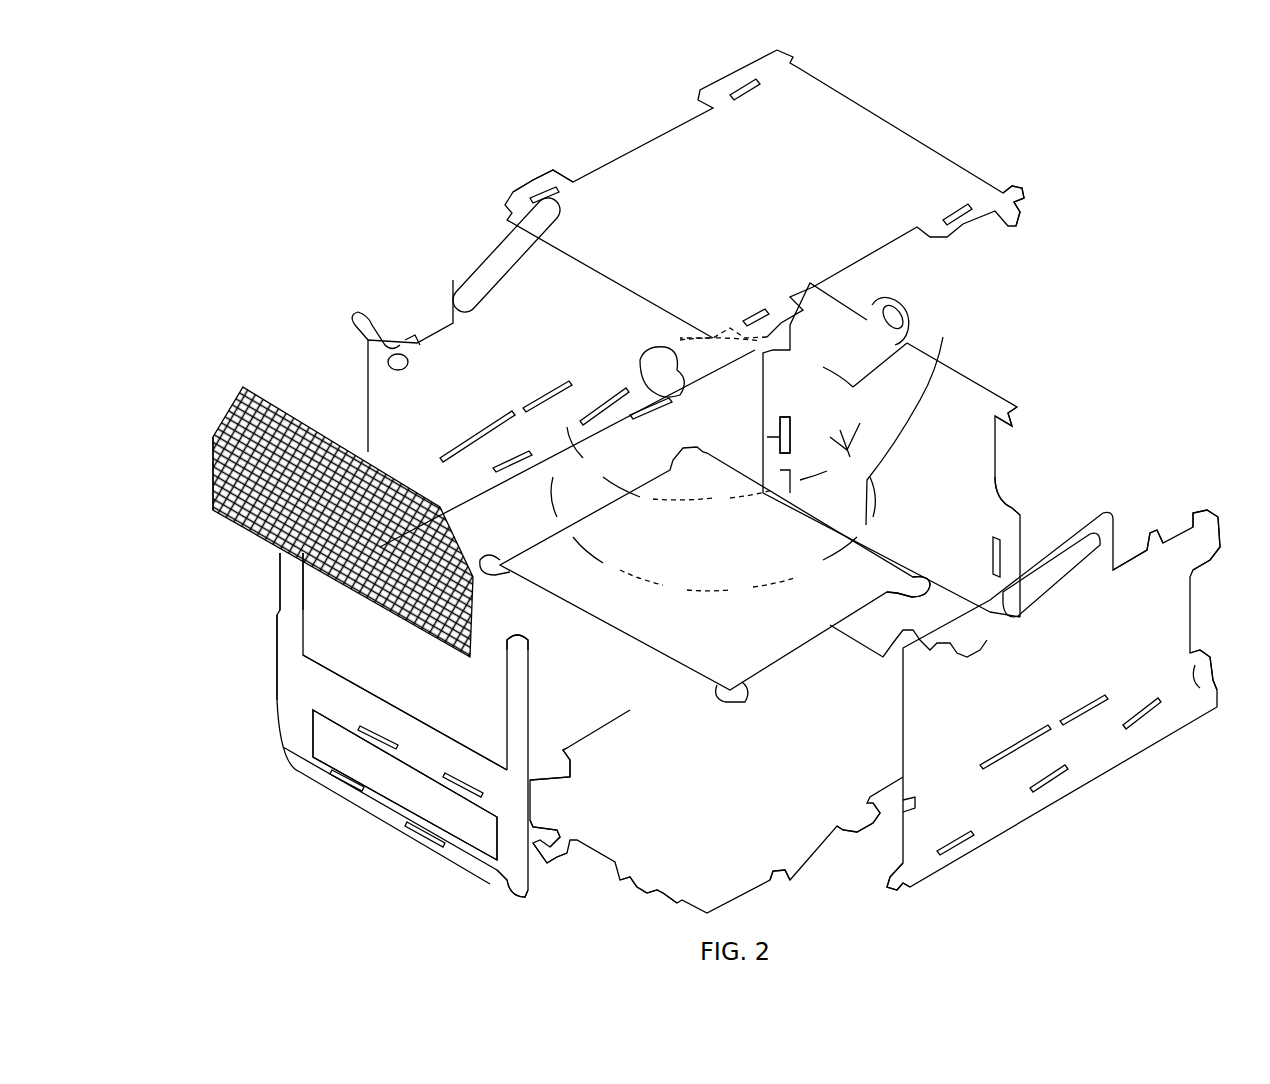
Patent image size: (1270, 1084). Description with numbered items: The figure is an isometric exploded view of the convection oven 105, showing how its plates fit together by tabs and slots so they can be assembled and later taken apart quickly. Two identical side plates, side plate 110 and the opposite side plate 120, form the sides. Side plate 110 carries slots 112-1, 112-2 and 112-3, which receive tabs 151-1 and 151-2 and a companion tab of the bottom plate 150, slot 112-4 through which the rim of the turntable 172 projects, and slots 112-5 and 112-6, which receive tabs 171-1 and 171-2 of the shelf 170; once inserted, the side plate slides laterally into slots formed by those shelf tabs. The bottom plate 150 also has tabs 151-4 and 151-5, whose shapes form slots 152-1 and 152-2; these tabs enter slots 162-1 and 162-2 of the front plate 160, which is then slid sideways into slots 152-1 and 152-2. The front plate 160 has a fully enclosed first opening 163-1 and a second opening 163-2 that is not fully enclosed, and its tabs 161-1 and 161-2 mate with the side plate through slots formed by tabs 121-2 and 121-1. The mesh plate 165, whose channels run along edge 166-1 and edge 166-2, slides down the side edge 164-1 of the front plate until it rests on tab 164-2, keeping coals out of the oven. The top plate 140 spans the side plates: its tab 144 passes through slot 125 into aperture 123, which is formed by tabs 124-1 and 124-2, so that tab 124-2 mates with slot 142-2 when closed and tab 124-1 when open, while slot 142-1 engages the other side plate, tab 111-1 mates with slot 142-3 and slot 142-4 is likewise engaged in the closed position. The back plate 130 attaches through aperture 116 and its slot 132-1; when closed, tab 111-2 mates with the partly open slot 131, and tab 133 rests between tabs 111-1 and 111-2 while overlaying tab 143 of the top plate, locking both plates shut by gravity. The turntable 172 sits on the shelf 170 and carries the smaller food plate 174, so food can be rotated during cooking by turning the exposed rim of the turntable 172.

The convection oven 105 is at (252, 90).
The side plate 110 is at (1146, 667).
The tab 111-1 is at (1147, 540).
The tab 111-2 is at (1205, 520).
The slot 112-1 is at (950, 846).
The slot 112-2 is at (1047, 783).
The slot 112-3 is at (1140, 723).
The slot 112-4 is at (1010, 750).
The slot 112-5 is at (1067, 717).
The slot 112-6 is at (907, 800).
The aperture 116 is at (1210, 700).
The side plate 120 is at (537, 362).
The tab 121-1 is at (883, 660).
The tab 121-2 is at (887, 880).
The aperture 123 is at (407, 372).
The tab 124-1 is at (385, 325).
The tab 124-2 is at (420, 335).
The slot 125 is at (412, 345).
The back plate 130 is at (947, 482).
The slot 131 is at (1010, 455).
The slot 132-1 is at (778, 440).
The tab 133 is at (1015, 410).
The top plate 140 is at (760, 226).
The slot 142-1 is at (758, 310).
The slot 142-2 is at (556, 205).
The slot 142-3 is at (945, 220).
The slot 142-4 is at (744, 102).
The tab 143 is at (1017, 212).
The tab 144 is at (509, 200).
The bottom plate 150 is at (769, 757).
The tab 151-1 is at (783, 888).
The tab 151-2 is at (856, 815).
The tab 151-4 is at (552, 855).
The tab 151-5 is at (643, 900).
The slot 152-1 is at (555, 828).
The slot 152-2 is at (643, 878).
The front plate 160 is at (329, 697).
The tab 161-1 is at (505, 892).
The tab 161-2 is at (500, 662).
The slot 162-1 is at (350, 790).
The slot 162-2 is at (410, 828).
The first opening 163-1 is at (357, 750).
The second opening 163-2 is at (333, 637).
The edge 164-1 is at (280, 572).
The tab 164-2 is at (278, 620).
The mesh plate 165 is at (250, 408).
The edge 166-1 is at (212, 478).
The edge 166-2 is at (478, 578).
The shelf 170 is at (724, 620).
The tab 171-1 is at (912, 592).
The tab 171-2 is at (728, 690).
The turntable 172 is at (944, 345).
The food plate 174 is at (905, 345).